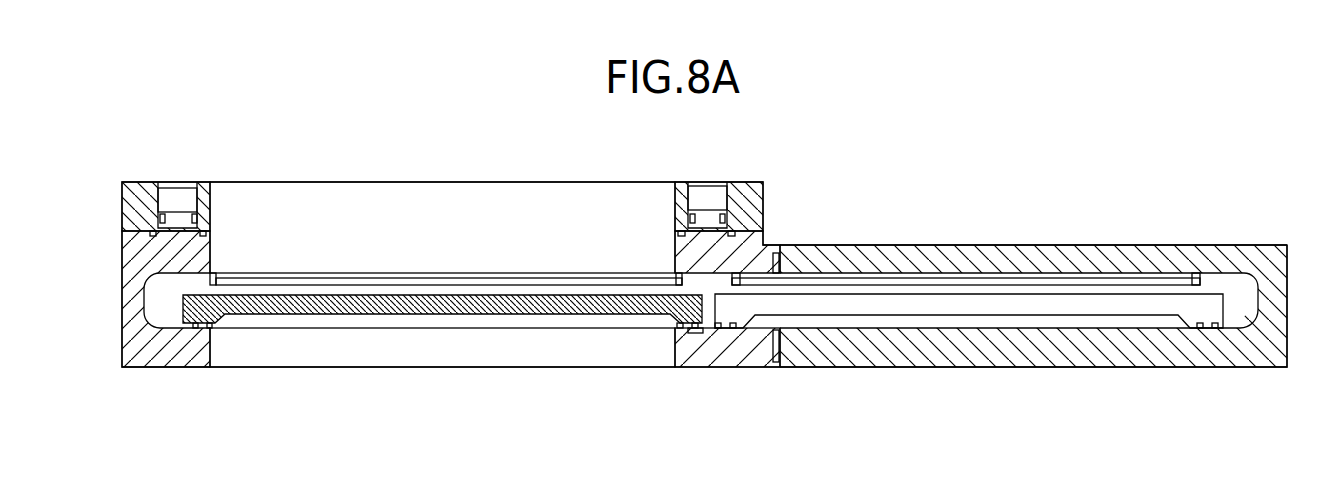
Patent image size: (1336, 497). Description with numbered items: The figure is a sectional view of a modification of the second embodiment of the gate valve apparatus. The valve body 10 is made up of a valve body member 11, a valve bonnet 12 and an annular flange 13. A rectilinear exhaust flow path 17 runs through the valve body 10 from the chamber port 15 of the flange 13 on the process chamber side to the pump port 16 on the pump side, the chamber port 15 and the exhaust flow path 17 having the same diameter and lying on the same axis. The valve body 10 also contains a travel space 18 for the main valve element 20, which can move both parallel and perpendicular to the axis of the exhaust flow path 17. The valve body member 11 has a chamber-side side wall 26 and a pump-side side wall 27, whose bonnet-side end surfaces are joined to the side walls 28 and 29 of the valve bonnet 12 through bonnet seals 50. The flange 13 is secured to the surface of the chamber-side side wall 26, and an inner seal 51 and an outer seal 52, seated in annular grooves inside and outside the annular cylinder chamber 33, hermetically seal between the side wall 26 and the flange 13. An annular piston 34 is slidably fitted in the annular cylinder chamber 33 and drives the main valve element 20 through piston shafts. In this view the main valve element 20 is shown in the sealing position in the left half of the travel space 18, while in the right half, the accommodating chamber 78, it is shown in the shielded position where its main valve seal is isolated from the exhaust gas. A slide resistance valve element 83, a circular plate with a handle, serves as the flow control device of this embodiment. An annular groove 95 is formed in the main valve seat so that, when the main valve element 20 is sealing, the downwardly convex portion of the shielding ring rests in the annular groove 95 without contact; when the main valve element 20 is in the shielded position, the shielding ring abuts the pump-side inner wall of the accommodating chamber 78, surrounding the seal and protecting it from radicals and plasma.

The valve body 10 is at (122, 165).
The valve body member 11 is at (709, 360).
The valve bonnet 12 is at (976, 360).
The flange 13 is at (763, 188).
The chamber port 15 is at (235, 203).
The pump port 16 is at (240, 346).
The exhaust flow path 17 is at (430, 322).
The travel space 18 is at (142, 294).
The main valve element 20 is at (518, 313).
The chamber-side side wall 26 is at (752, 250).
The pump-side side wall 27 is at (750, 346).
The side wall of valve bonnet 28 is at (1013, 262).
The side wall of valve bonnet 29 is at (1050, 346).
The annular cylinder chamber 33 is at (158, 215).
The annular piston 34 is at (708, 220).
The bonnet seal 50 is at (777, 263).
The inner seal 51 is at (678, 242).
The outer seal 52 is at (148, 236).
The accommodating chamber 78 is at (1244, 290).
The slide resistance valve element 83 is at (355, 286).
The annular groove 95 is at (188, 333).